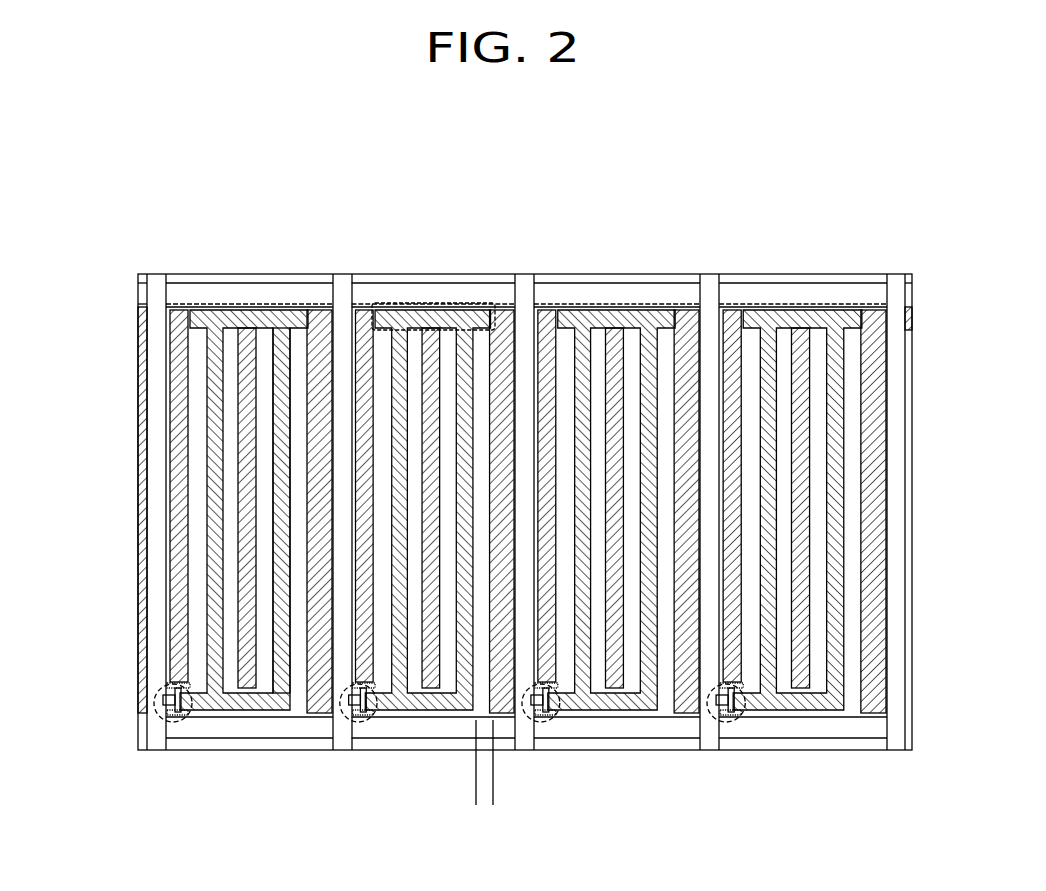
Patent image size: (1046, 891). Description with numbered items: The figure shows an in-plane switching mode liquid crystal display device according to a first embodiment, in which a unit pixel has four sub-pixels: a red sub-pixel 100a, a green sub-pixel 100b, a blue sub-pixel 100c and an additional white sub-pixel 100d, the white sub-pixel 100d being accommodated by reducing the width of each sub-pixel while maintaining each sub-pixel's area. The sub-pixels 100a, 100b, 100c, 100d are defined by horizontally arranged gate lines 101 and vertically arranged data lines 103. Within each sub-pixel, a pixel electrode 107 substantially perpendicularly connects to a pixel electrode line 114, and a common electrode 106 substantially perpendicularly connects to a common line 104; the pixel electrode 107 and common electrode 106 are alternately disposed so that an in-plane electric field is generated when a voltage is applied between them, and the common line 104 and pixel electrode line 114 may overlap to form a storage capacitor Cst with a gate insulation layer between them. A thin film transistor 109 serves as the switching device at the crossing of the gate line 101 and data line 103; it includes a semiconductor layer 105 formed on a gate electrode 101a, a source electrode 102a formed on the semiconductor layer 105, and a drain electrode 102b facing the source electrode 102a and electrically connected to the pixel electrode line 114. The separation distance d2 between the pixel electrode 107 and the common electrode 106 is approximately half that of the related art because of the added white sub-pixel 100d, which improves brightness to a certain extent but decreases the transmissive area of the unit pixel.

The red sub-pixel 100a is at (200, 556).
The green sub-pixel 100b is at (431, 564).
The blue sub-pixel 100c is at (622, 812).
The white sub-pixel 100d is at (818, 812).
The gate line 101 is at (249, 758).
The gate electrode 101a is at (132, 672).
The source electrode 102a is at (121, 709).
The drain electrode 102b is at (207, 757).
The data line 103 is at (147, 572).
The common line 104 is at (210, 307).
The semiconductor layer 105 is at (182, 745).
The common electrode 106 is at (251, 467).
The pixel electrode 107 is at (244, 465).
The thin film transistor 109 is at (136, 718).
The pixel electrode line 114 is at (288, 457).
The storage capacitor Cst is at (432, 303).
The separation distance d2 is at (522, 786).